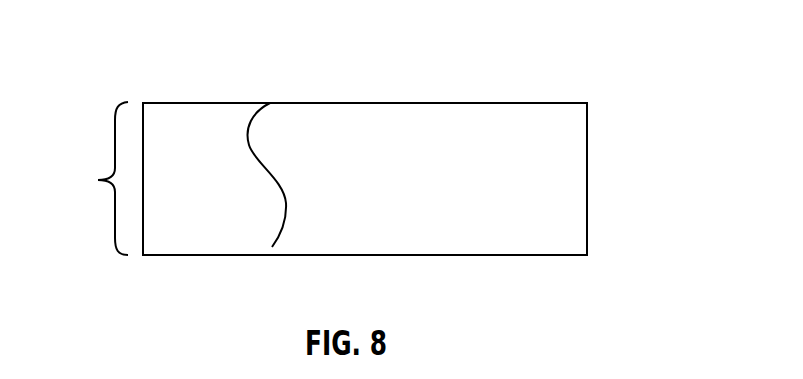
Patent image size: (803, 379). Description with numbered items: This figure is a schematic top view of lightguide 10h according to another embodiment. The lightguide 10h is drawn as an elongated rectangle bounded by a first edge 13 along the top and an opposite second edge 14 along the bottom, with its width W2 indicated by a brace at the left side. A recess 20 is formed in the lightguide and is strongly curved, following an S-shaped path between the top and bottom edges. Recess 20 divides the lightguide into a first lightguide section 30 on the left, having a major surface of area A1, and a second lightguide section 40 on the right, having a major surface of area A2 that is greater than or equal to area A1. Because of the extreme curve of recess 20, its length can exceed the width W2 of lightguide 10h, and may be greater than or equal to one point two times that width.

The lightguide 10h is at (548, 103).
The first edge 13 is at (397, 103).
The second edge 14 is at (408, 255).
The recess 20 is at (288, 208).
The first lightguide section 30 is at (205, 120).
The second lightguide section 40 is at (570, 163).
The width W2 is at (89, 178).